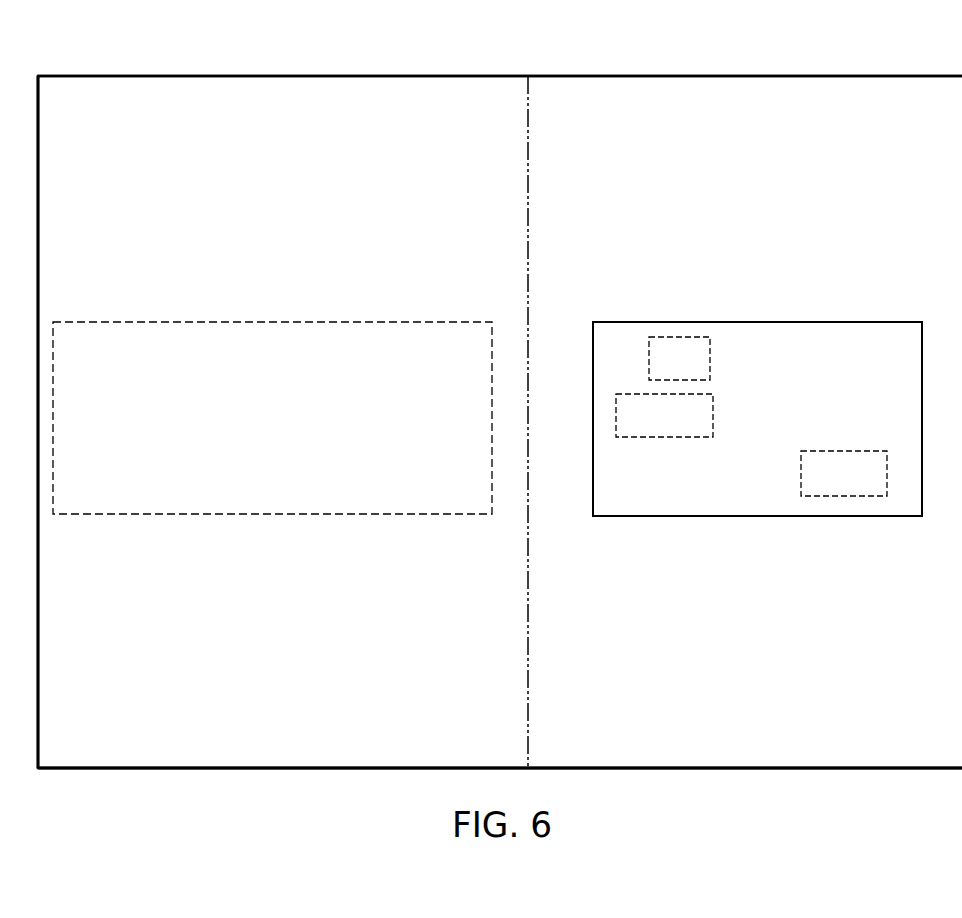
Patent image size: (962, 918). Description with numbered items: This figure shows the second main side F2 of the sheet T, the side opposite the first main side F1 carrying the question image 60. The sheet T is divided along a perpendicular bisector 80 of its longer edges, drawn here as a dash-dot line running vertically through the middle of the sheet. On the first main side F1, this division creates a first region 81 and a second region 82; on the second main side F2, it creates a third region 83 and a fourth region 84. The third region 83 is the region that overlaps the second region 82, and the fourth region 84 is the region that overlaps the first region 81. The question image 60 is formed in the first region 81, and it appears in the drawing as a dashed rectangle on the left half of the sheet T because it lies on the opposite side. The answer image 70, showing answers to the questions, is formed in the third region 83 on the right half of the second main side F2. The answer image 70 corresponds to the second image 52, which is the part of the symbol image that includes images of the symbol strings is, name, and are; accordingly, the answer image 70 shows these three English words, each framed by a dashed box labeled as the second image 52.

The sheet T is at (859, 76).
The first main side F1 is at (245, 110).
The second main side F2 is at (762, 90).
The perpendicular bisector 80 is at (528, 105).
The question image 60 is at (411, 320).
The answer image 70 is at (868, 322).
The second image 52 is at (693, 337).
The first region 81 is at (340, 731).
The second region 82 is at (812, 731).
The third region 83 is at (717, 752).
The fourth region 84 is at (246, 752).